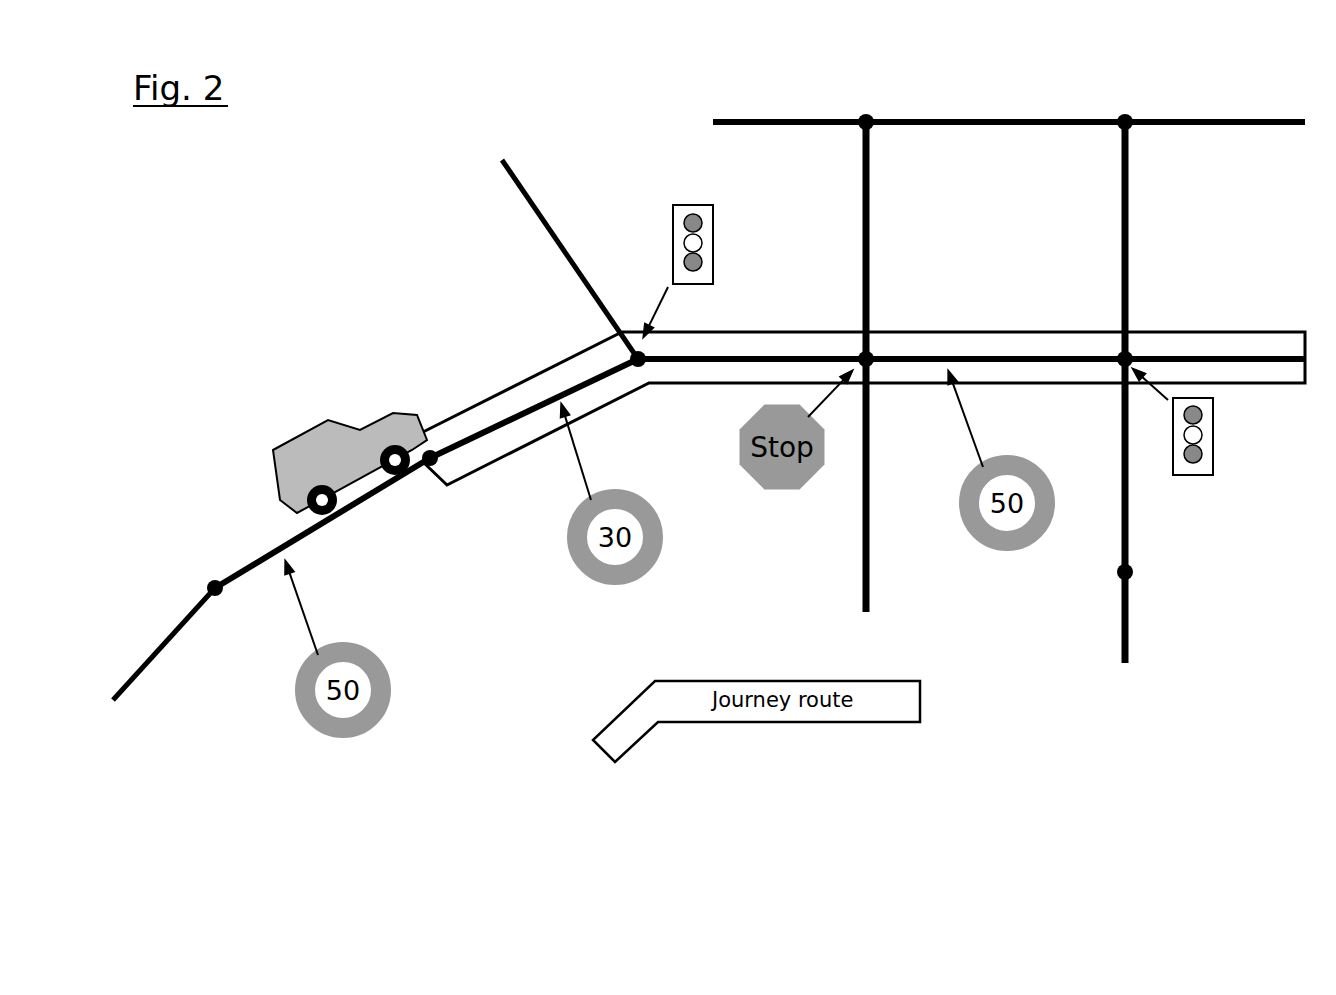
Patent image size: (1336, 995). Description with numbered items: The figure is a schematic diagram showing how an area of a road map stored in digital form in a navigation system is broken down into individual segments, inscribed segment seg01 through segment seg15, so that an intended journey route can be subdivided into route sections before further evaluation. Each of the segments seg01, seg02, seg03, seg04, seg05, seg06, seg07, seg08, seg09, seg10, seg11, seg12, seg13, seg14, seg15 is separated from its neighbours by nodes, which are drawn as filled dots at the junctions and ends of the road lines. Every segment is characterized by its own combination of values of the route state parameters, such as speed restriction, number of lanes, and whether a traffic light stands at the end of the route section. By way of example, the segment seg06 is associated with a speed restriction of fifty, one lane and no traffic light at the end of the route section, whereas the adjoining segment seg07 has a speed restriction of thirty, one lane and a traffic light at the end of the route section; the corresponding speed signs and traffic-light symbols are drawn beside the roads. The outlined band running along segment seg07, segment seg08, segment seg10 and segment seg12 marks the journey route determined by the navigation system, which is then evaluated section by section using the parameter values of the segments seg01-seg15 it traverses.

The segment seg01 is at (789, 101).
The segment seg02 is at (995, 101).
The segment seg03 is at (1215, 101).
The segment seg04 is at (571, 259).
The segment seg05 is at (176, 644).
The segment seg06 is at (322, 523).
The segment seg07 is at (531, 408).
The segment seg08 is at (752, 328).
The segment seg09 is at (906, 240).
The segment seg10 is at (995, 328).
The segment seg11 is at (1164, 240).
The segment seg12 is at (1215, 328).
The segment seg13 is at (1167, 617).
The segment seg14 is at (1168, 465).
The segment seg15 is at (815, 485).